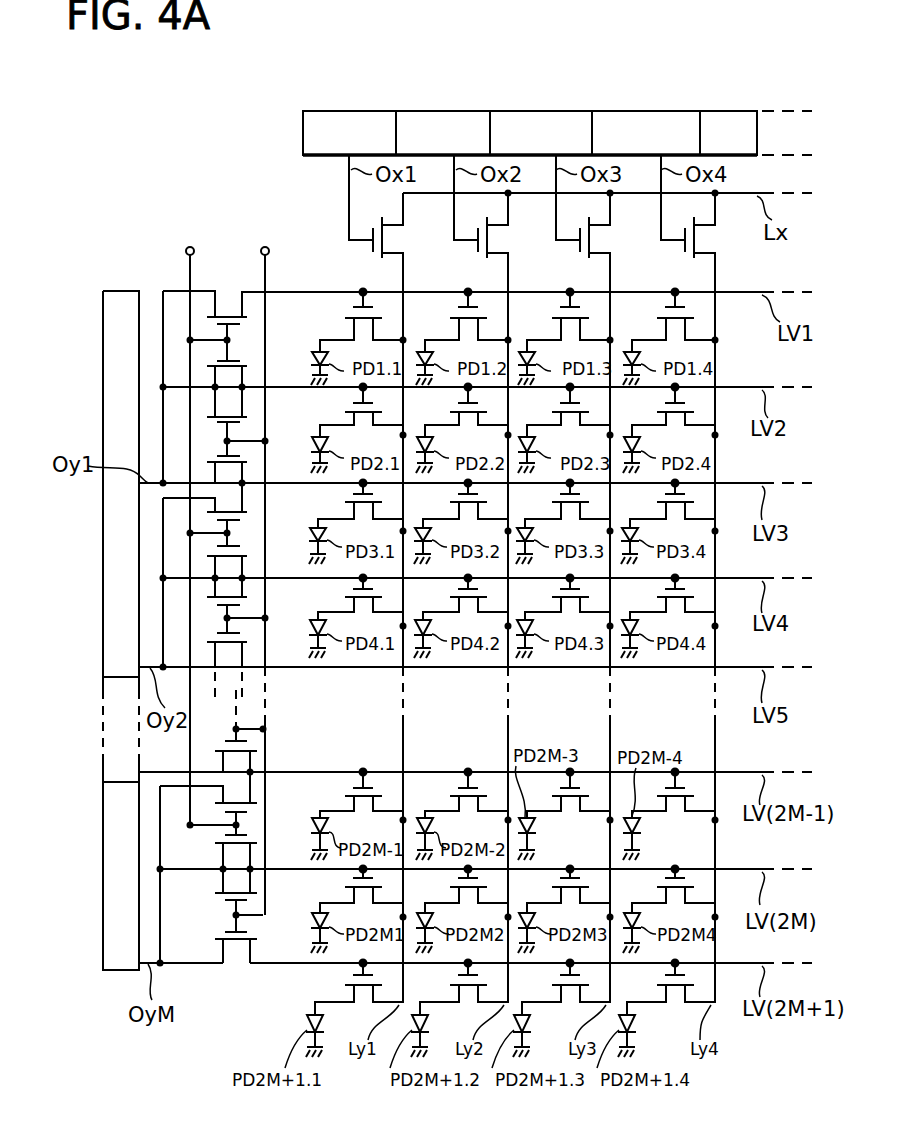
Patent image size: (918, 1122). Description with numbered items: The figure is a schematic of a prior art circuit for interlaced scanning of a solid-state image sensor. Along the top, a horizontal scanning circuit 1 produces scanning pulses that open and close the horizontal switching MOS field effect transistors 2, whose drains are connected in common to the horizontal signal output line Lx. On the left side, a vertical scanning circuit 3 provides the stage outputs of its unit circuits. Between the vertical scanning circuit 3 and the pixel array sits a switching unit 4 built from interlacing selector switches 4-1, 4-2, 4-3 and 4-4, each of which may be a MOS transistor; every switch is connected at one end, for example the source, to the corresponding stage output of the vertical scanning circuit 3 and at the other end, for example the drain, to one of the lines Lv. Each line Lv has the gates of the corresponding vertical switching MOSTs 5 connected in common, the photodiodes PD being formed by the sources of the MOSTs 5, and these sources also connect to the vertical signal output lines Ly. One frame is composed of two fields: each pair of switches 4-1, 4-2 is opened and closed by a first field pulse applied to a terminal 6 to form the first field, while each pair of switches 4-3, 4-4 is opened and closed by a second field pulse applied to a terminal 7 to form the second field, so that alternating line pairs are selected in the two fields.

The horizontal scanning circuit 1 is at (328, 111).
The horizontal switching MOS field effect transistors 2 is at (386, 240).
The vertical scanning circuit 3 is at (122, 290).
The switching unit 4 is at (229, 308).
The interlacing selector switch 4-1 is at (278, 795).
The interlacing selector switch 4-2 is at (278, 842).
The interlacing selector switch 4-3 is at (278, 884).
The interlacing selector switch 4-4 is at (278, 938).
The vertical switching MOSTs 5 is at (345, 319).
The terminal 6 is at (190, 247).
The terminal 7 is at (265, 247).